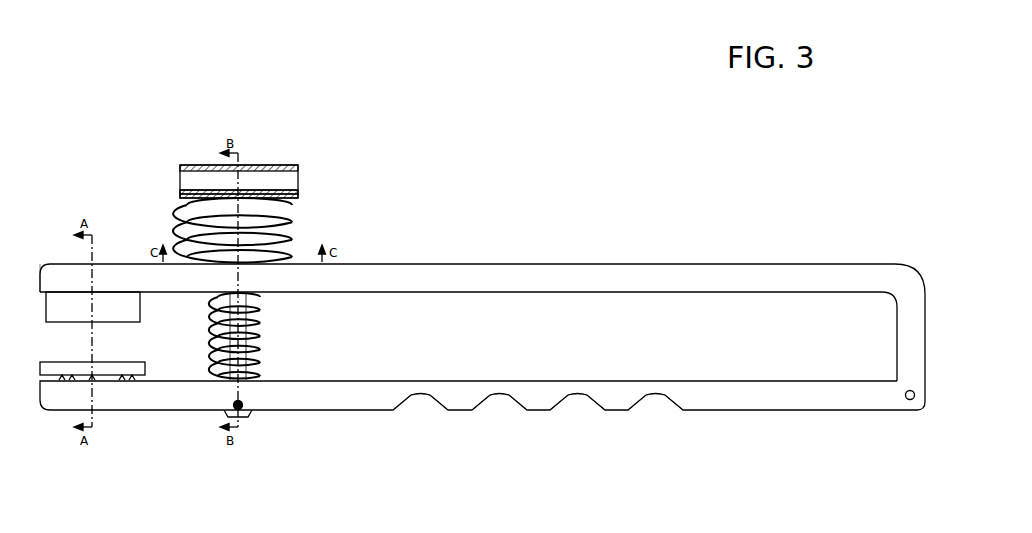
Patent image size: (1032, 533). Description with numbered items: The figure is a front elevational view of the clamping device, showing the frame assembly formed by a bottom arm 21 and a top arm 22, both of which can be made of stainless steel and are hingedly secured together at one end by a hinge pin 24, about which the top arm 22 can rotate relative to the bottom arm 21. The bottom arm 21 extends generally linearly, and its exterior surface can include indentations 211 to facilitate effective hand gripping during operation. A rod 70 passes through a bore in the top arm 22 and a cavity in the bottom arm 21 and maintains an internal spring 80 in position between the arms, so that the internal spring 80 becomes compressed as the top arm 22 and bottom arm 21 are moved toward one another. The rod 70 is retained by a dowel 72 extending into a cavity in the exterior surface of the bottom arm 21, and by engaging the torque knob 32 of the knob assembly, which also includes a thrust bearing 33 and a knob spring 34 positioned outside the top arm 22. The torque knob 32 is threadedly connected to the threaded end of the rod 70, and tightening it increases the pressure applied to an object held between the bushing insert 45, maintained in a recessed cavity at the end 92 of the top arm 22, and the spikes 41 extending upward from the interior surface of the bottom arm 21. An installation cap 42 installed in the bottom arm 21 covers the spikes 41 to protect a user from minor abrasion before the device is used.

The end of the top arm 92 is at (45, 237).
The bushing insert 45 is at (114, 287).
The torque knob 32 is at (283, 181).
The thrust bearing 33 is at (299, 197).
The knob spring 34 is at (286, 238).
The top arm 22 is at (710, 275).
The internal spring 80 is at (259, 312).
The rod 70 is at (258, 348).
The dowel 72 is at (254, 409).
The installation cap 42 is at (108, 381).
The spikes 41 is at (134, 396).
The bottom arm 21 is at (710, 409).
The indentations 211 is at (491, 417).
The hinge pin 24 is at (906, 400).